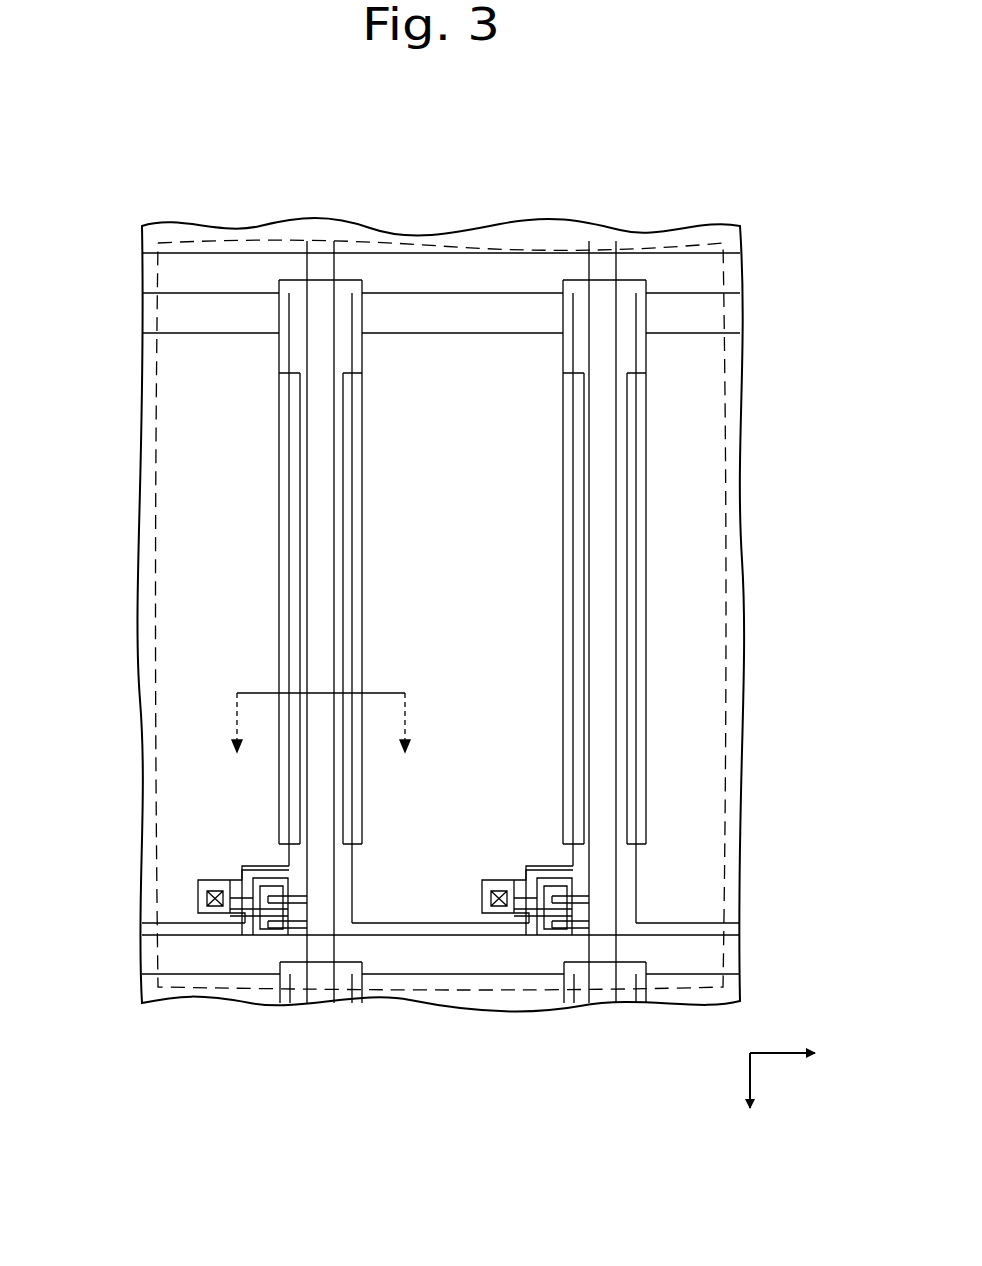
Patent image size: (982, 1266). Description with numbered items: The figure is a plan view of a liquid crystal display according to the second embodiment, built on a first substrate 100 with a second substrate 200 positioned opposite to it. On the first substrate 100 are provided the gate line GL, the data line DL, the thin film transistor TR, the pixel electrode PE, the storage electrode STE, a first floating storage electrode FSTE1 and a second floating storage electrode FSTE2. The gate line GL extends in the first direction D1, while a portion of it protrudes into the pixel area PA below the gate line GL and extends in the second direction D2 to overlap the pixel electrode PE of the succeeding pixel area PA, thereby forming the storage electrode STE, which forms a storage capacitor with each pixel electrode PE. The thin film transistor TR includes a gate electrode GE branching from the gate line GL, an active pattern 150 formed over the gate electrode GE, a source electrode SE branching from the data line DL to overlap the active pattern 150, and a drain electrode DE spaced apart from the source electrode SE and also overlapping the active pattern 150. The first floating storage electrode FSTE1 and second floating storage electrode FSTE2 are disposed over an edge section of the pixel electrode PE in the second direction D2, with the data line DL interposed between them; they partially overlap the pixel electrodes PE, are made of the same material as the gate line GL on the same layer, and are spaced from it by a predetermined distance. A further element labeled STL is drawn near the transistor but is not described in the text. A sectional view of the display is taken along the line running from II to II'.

The first substrate 100 is at (143, 636).
The second substrate 200 is at (158, 578).
The gate line GL is at (740, 262).
The data line DL is at (322, 997).
The storage electrode STE is at (503, 317).
The first floating storage electrode FSTE1 is at (279, 528).
The second floating storage electrode FSTE2 is at (357, 528).
The storage line STL is at (408, 907).
The pixel electrode PE is at (443, 292).
The pixel area PA is at (420, 377).
The thin film transistor TR is at (409, 992).
The gate electrode GE is at (530, 925).
The source electrode SE is at (565, 933).
The drain electrode DE is at (492, 913).
The active pattern 150 is at (550, 930).
The section line II is at (315, 738).
The section line II' is at (406, 738).
The first direction D1 is at (809, 1053).
The second direction D2 is at (754, 1100).